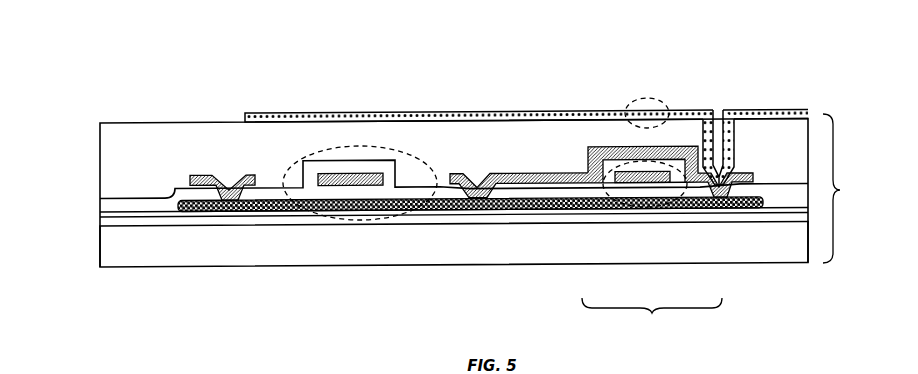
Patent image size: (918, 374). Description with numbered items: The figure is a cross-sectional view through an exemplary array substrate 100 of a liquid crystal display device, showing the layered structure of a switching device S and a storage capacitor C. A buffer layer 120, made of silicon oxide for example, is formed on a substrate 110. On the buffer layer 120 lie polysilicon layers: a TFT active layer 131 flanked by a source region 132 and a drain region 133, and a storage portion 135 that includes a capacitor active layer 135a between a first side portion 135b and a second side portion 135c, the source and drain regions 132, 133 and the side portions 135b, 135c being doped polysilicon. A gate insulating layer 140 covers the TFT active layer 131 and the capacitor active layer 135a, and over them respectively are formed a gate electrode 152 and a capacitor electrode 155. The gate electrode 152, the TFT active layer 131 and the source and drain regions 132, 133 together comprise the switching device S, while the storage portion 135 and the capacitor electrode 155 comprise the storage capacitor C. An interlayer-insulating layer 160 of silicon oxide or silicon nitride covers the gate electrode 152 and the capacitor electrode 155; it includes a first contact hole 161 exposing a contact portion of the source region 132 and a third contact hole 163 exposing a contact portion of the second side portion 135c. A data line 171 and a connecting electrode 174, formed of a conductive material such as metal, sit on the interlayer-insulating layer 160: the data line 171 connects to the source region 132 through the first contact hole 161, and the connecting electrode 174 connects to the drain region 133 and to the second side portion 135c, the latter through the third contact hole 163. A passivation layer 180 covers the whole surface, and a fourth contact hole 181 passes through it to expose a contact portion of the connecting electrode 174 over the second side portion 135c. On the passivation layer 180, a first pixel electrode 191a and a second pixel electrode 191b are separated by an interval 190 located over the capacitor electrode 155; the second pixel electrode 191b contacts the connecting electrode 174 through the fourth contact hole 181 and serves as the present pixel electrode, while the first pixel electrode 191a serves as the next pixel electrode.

The array substrate 100 is at (847, 188).
The substrate 110 is at (454, 244).
The buffer layer 120 is at (465, 220).
The TFT active layer 131 is at (338, 208).
The source region 132 is at (275, 208).
The drain region 133 is at (404, 202).
The storage portion 135 is at (652, 314).
The capacitor active layer 135a is at (645, 205).
The first side portion 135b is at (603, 206).
The second side portion 135c is at (705, 205).
The gate insulating layer 140 is at (321, 173).
The gate electrode 152 is at (374, 171).
The capacitor electrode 155 is at (647, 148).
The interlayer-insulating layer 160 is at (128, 205).
The first contact hole 161 is at (226, 165).
The third contact hole 163 is at (737, 168).
The data line 171 is at (228, 201).
The connecting electrode 174 is at (525, 188).
The passivation layer 180 is at (176, 160).
The fourth contact hole 181 is at (719, 100).
The interval 190 is at (632, 103).
The first pixel electrode 191a is at (528, 111).
The second pixel electrode 191b is at (778, 109).
The switching device S is at (408, 153).
The storage capacitor C is at (673, 162).